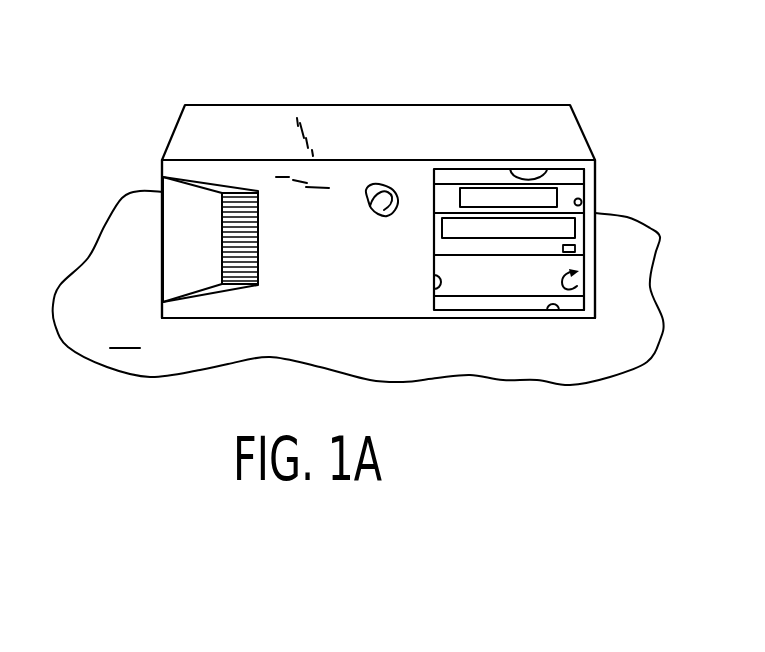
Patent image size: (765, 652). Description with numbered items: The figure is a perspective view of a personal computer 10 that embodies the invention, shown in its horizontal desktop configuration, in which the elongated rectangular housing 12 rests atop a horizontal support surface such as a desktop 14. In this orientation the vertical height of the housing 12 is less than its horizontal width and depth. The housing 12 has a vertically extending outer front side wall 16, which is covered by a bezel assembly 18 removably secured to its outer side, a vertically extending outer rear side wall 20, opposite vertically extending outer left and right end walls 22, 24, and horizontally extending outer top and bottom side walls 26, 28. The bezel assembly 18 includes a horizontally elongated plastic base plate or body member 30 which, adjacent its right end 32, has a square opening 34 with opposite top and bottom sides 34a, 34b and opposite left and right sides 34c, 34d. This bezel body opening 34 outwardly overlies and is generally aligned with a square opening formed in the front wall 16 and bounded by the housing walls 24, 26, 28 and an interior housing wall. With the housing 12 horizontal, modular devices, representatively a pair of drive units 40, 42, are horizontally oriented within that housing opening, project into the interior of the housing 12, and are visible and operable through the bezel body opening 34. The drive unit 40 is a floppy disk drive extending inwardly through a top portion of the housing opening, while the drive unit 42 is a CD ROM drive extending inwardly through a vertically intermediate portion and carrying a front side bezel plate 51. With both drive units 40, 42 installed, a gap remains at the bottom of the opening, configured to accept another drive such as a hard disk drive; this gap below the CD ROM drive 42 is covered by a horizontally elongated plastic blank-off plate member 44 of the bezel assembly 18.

The personal computer 10 is at (537, 34).
The housing 12 is at (587, 126).
The desktop 14 is at (125, 331).
The outer front side wall 16 is at (370, 207).
The bezel assembly 18 is at (264, 297).
The outer rear side wall 20 is at (386, 117).
The outer left end wall 22 is at (167, 227).
The outer right end wall 24 is at (598, 182).
The outer top side wall 26 is at (260, 117).
The outer bottom side wall 28 is at (413, 320).
The bezel body member 30 is at (345, 310).
The right end 32 is at (597, 218).
The square opening 34 is at (577, 286).
The top side 34a is at (540, 168).
The bottom side 34b is at (560, 317).
The left side 34c is at (434, 276).
The right side 34d is at (582, 203).
The floppy disk drive unit 40 is at (448, 196).
The CD ROM drive unit 42 is at (467, 233).
The blank-off plate member 44 is at (527, 280).
The front side bezel plate 51 is at (518, 245).